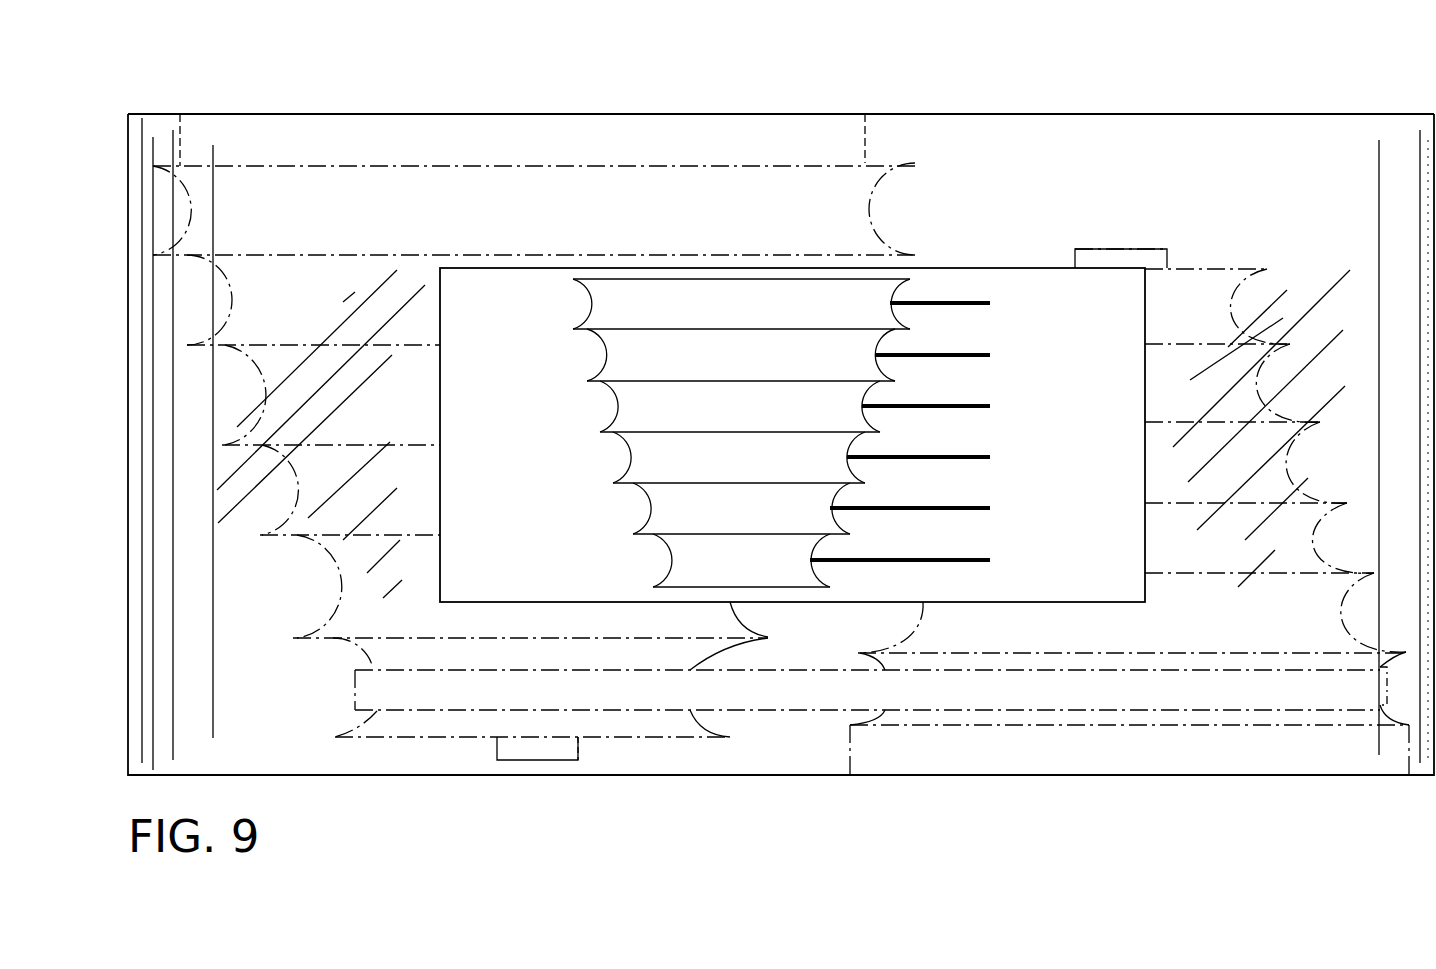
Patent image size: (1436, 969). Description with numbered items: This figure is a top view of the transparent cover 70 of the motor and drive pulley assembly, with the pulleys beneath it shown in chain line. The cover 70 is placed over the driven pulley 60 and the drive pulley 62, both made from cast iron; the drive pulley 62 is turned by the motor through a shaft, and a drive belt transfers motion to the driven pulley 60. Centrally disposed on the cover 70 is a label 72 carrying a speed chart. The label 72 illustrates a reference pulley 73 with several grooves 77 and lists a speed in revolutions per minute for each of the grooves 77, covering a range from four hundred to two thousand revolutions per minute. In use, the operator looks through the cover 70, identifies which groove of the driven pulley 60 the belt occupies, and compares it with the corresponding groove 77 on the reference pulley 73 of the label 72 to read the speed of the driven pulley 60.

The driven pulley 60 is at (268, 140).
The transparent cover 70 is at (1193, 112).
The drive pulley 62 is at (1256, 757).
The label 72 is at (475, 278).
The reference pulley 73 is at (780, 290).
The grooves 77 is at (877, 293).